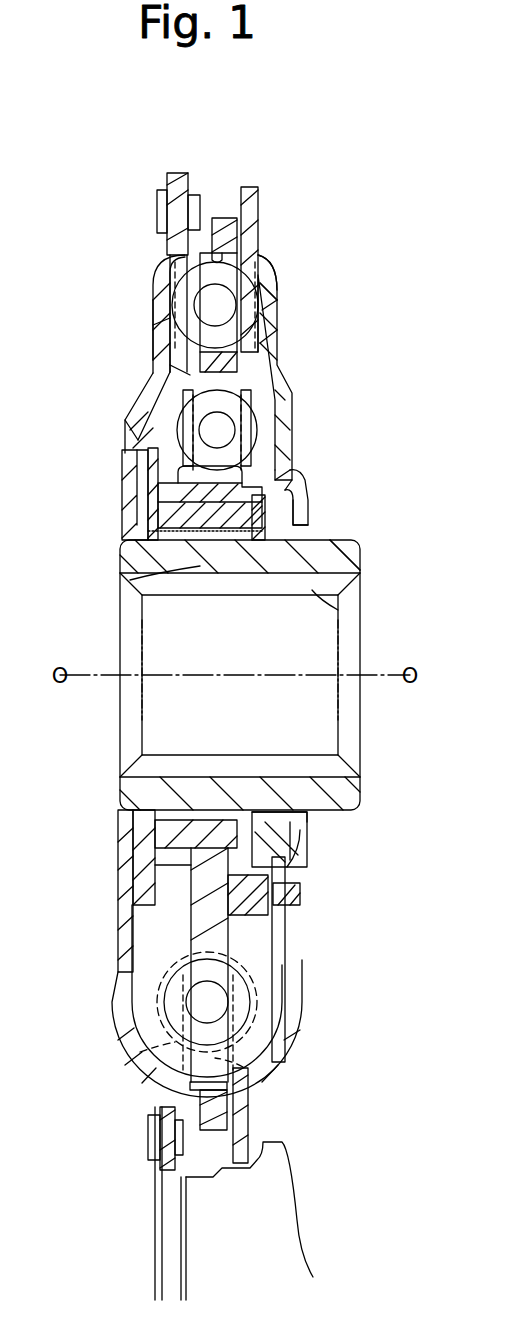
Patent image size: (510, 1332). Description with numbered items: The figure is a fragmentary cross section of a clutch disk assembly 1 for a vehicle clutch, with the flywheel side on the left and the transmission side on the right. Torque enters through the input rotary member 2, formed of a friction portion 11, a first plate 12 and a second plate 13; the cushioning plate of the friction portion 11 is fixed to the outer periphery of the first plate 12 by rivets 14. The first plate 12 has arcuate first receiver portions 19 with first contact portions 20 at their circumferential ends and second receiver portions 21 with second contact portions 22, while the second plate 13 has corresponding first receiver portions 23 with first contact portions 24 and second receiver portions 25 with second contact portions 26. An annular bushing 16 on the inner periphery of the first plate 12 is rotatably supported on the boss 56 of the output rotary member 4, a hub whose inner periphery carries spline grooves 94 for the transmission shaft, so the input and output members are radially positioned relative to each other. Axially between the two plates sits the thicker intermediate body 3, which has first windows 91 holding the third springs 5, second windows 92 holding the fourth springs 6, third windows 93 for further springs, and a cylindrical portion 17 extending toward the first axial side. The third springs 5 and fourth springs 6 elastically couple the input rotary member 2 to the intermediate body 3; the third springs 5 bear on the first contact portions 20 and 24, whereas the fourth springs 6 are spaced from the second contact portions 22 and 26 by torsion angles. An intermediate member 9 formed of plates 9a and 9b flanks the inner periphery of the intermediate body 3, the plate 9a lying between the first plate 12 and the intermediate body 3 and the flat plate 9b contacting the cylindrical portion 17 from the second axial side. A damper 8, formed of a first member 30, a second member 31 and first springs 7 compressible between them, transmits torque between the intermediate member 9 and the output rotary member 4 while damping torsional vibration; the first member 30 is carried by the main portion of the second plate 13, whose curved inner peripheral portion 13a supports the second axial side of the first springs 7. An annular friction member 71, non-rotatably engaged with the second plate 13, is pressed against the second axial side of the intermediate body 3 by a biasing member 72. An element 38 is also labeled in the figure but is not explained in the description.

The clutch disk assembly 1 is at (418, 214).
The input rotary member 2 is at (103, 225).
The intermediate body 3 is at (178, 376).
The output rotary member 4 is at (397, 552).
The third springs 5 is at (267, 1010).
The fourth springs 6 is at (268, 268).
The first springs 7 is at (300, 472).
The damper 8 is at (293, 484).
The intermediate member 9 is at (157, 405).
The plate 9a is at (185, 470).
The plate 9b is at (262, 350).
The friction portion 11 is at (148, 1232).
The first plate 12 is at (125, 912).
The second plate 13 is at (278, 918).
The inner peripheral portion 13a is at (305, 500).
The rivets 14 is at (160, 212).
The annular bushing 16 is at (126, 536).
The cylindrical portion 17 is at (152, 500).
The first receiver portions 19 is at (120, 1020).
The first contact portions 20 is at (140, 1052).
The second receiver portions 21 is at (160, 282).
The second contact portions 22 is at (158, 325).
The first receiver portions 23 is at (287, 977).
The first contact portions 24 is at (243, 1067).
The second receiver portions 25 is at (266, 290).
The second contact portions 26 is at (273, 312).
The first member 30 is at (297, 858).
The second member 31 is at (262, 812).
The rotor front face 38 is at (200, 566).
The boss 56 is at (340, 546).
The friction member 71 is at (262, 932).
The biasing member 72 is at (298, 906).
The first windows 91 is at (235, 1073).
The second windows 92 is at (215, 245).
The third windows 93 is at (228, 470).
The spline grooves 94 is at (312, 590).